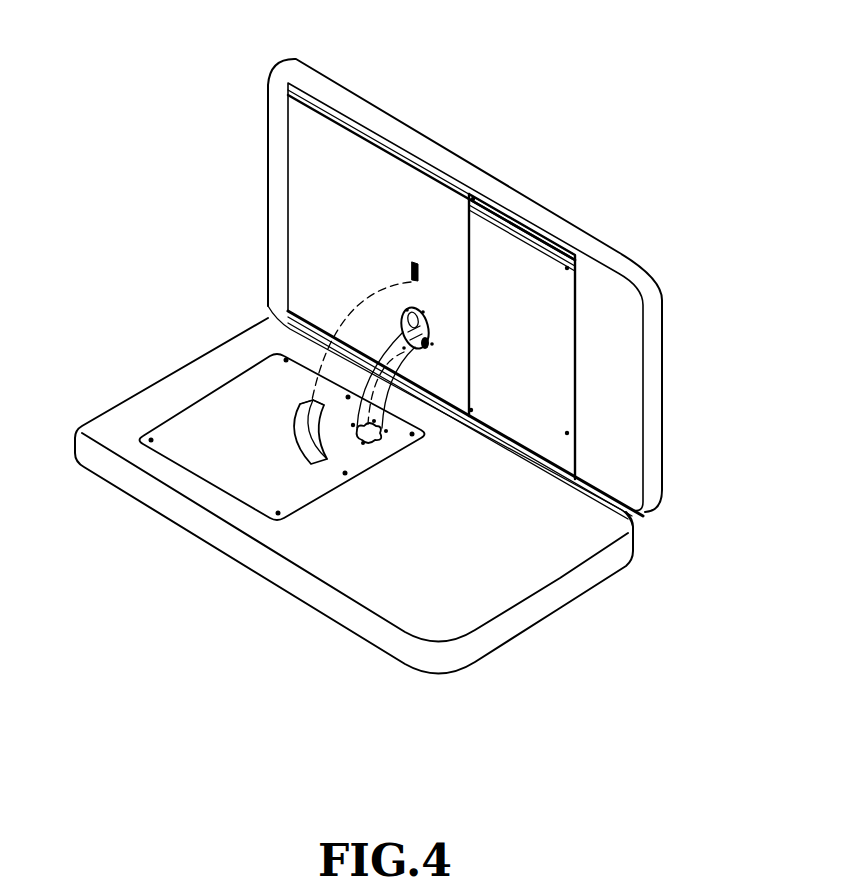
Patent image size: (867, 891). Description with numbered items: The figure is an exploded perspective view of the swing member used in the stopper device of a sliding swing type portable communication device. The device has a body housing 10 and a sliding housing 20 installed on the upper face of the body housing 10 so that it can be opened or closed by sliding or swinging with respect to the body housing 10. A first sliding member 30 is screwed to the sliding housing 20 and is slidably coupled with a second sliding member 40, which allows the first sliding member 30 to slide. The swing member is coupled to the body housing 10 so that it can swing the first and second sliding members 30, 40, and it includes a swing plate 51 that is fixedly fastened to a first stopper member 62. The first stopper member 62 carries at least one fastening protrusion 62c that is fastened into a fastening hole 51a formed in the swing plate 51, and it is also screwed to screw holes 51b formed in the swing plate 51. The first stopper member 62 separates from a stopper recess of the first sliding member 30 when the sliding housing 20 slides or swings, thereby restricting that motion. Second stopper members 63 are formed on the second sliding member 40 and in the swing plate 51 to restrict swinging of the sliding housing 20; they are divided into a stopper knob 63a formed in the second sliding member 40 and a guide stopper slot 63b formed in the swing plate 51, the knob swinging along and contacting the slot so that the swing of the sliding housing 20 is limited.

The body housing 10 is at (116, 418).
The sliding housing 20 is at (622, 258).
The first sliding member 30 is at (518, 247).
The second sliding member 40 is at (387, 167).
The swing plate 51 is at (200, 461).
The fastening hole 51a is at (380, 440).
The screw hole 51b is at (362, 447).
The first stopper member 62 is at (430, 332).
The fastening protrusion 62c is at (433, 342).
The second stopper member 63 is at (143, 232).
The stopper knob 63a is at (411, 270).
The guide stopper slot 63b is at (293, 427).